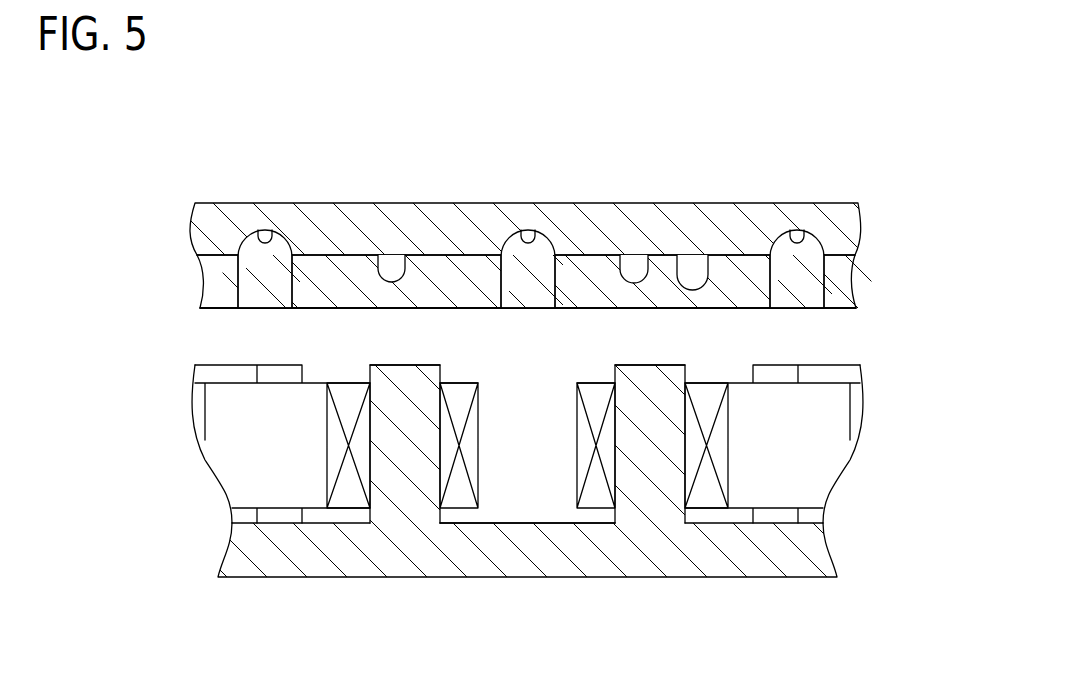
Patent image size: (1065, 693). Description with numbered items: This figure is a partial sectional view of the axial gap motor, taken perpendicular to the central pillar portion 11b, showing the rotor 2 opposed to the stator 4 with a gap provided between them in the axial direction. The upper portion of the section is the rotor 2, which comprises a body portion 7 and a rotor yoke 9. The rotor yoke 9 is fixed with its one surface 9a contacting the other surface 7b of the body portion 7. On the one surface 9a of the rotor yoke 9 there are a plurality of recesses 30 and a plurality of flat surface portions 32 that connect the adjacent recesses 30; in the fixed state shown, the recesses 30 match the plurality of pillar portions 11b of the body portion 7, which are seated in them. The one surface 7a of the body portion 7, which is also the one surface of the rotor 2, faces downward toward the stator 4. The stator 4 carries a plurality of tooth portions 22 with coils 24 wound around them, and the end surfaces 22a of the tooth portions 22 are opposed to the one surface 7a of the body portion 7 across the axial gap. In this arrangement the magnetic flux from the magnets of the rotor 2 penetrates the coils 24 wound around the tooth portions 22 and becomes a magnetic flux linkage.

The rotor 2 is at (843, 175).
The stator 4 is at (805, 580).
The body portion 7 is at (203, 287).
The one surface of the body portion 7a is at (840, 309).
The other surface of the body portion 7b is at (836, 253).
The rotor yoke 9 is at (190, 218).
The one surface of the rotor yoke 9a is at (671, 270).
The pillar portion 11b is at (263, 302).
The tooth portion 22 is at (400, 405).
The end surface of the tooth portion 22a is at (405, 365).
The coil 24 is at (349, 495).
The recess 30 is at (264, 230).
The flat surface portion 32 is at (397, 258).